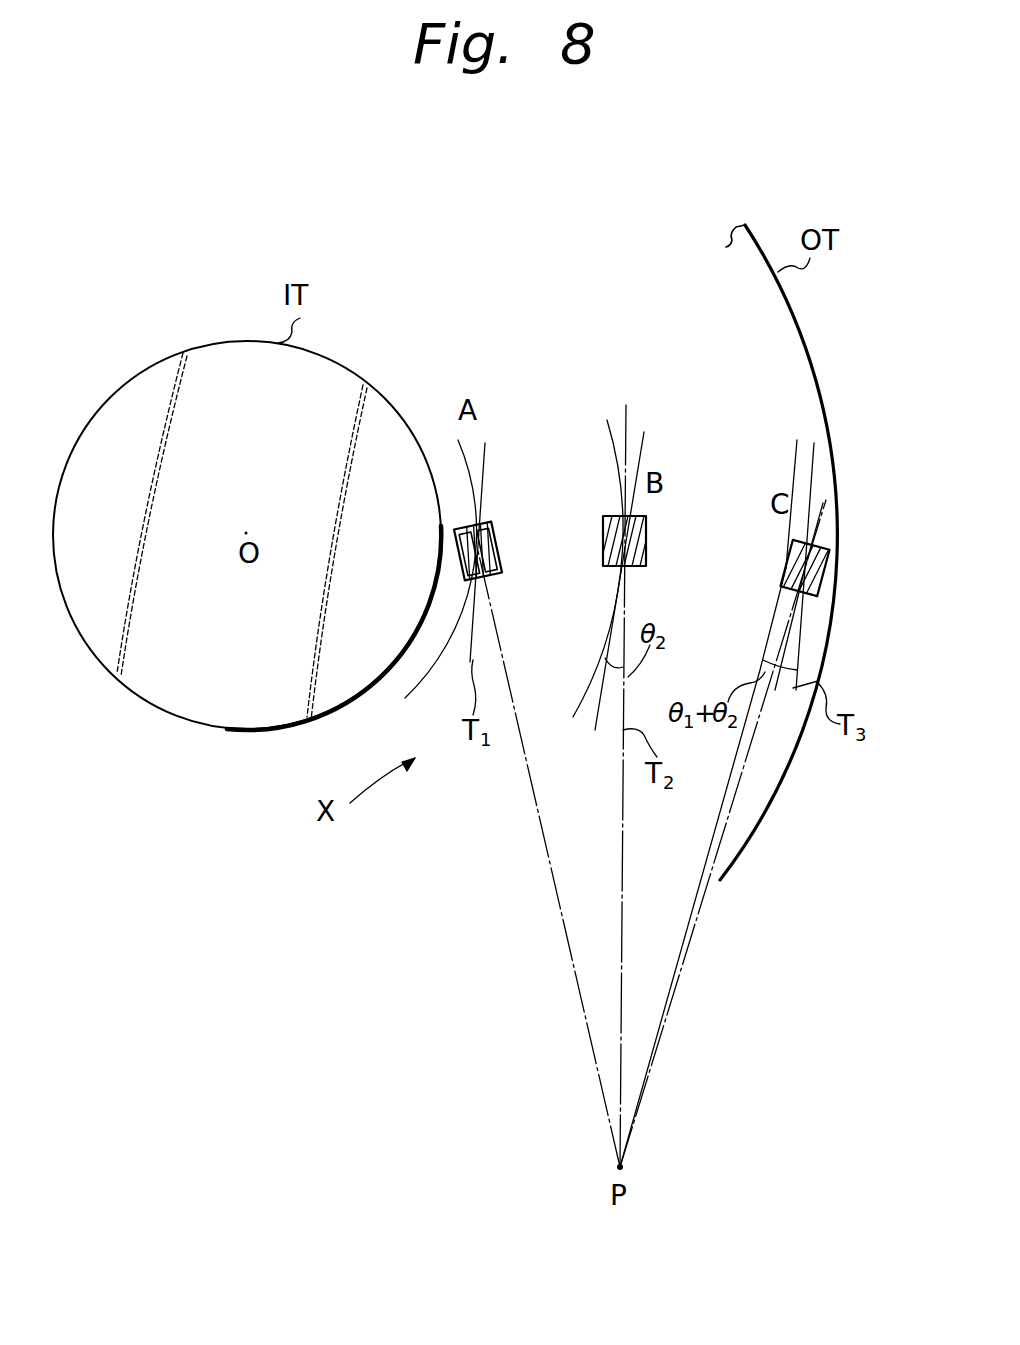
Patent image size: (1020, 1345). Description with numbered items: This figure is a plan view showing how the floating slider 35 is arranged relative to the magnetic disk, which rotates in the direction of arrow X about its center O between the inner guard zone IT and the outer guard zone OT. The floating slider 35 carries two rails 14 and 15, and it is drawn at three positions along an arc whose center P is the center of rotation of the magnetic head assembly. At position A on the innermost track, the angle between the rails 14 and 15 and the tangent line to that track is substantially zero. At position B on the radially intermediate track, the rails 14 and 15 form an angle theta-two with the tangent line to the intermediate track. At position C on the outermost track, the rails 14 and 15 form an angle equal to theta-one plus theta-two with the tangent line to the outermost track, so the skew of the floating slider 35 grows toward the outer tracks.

The rail 14 is at (500, 546).
The rail 15 is at (462, 561).
The floating slider 35 is at (500, 556).